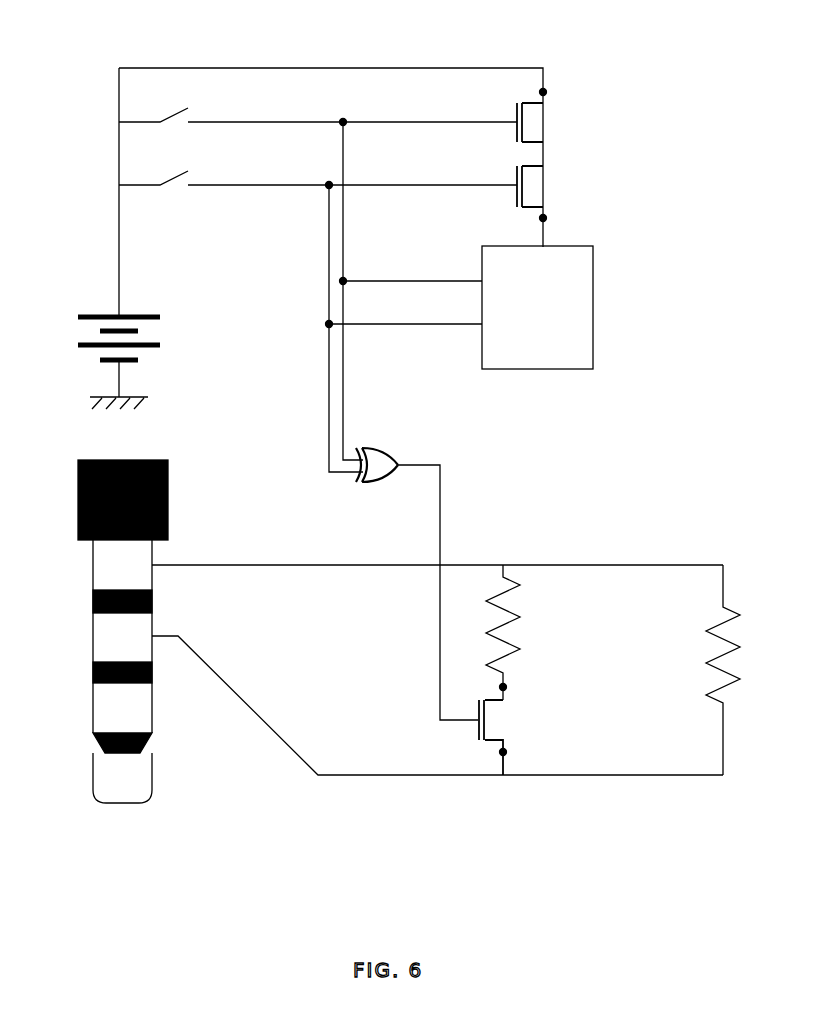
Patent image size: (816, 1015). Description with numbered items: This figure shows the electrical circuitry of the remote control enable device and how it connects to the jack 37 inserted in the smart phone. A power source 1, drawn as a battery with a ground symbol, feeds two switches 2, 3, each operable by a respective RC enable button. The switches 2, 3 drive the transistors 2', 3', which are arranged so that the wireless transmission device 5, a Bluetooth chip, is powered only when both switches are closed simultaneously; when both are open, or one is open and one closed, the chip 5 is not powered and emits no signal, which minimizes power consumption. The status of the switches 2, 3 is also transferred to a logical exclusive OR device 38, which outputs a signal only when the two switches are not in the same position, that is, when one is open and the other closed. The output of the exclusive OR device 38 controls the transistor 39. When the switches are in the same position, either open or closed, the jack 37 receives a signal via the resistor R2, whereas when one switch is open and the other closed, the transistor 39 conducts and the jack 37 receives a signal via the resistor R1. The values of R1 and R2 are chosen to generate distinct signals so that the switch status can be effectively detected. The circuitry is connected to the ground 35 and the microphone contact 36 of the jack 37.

The power source 1 is at (85, 300).
The switch 2 is at (318, 71).
The switch 3 is at (318, 218).
The transistor 2' is at (553, 113).
The transistor 3' is at (560, 190).
The wireless transmission device 5 is at (539, 311).
The ground 35 is at (97, 661).
The microphone contact 36 is at (93, 565).
The jack 37 is at (93, 656).
The logical exclusive OR device 38 is at (386, 450).
The transistor 39 is at (492, 722).
The resistor R1 is at (521, 632).
The resistor R2 is at (736, 670).